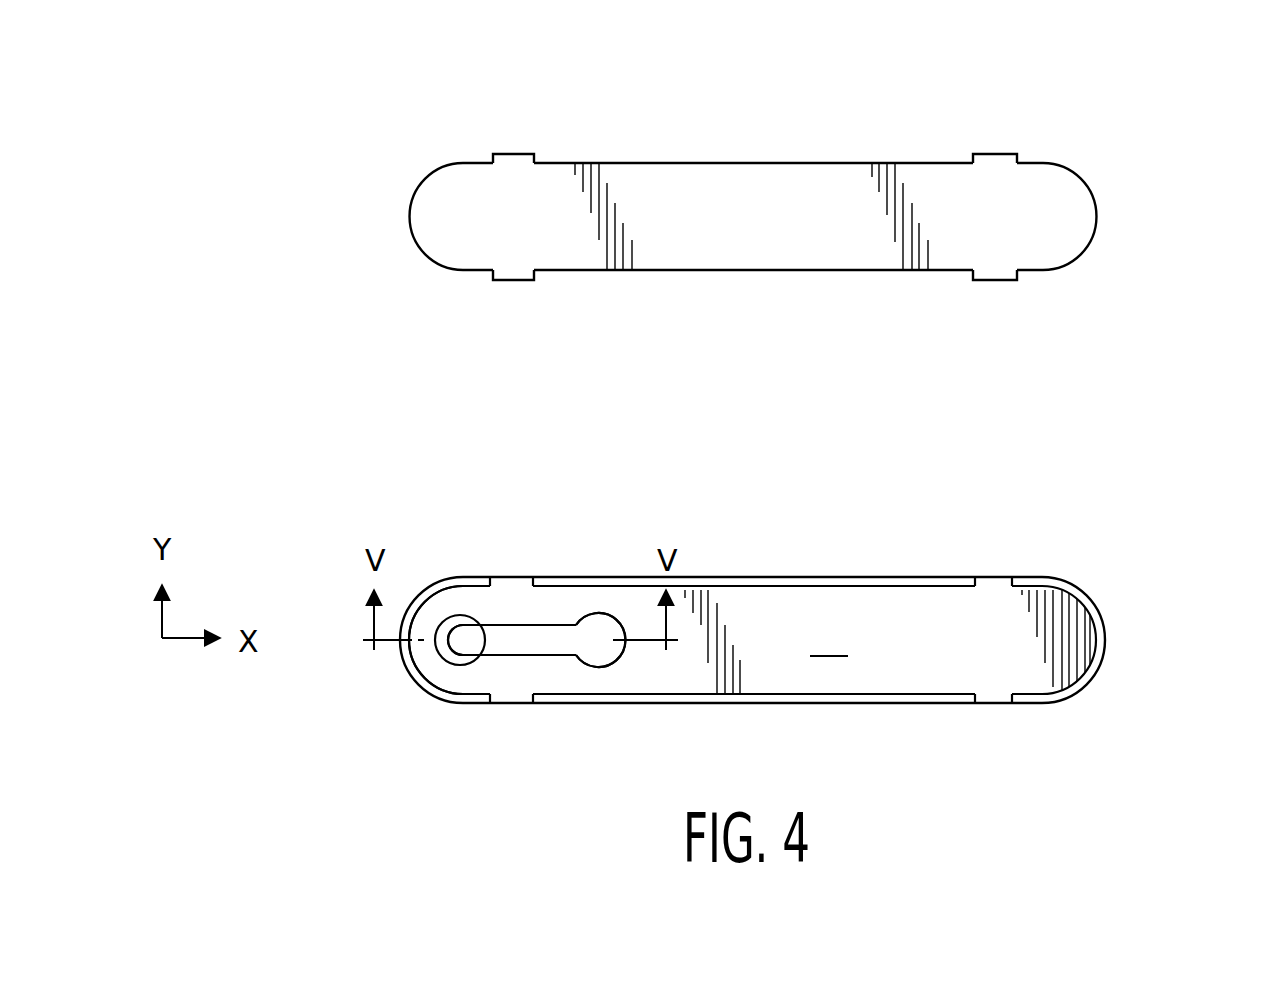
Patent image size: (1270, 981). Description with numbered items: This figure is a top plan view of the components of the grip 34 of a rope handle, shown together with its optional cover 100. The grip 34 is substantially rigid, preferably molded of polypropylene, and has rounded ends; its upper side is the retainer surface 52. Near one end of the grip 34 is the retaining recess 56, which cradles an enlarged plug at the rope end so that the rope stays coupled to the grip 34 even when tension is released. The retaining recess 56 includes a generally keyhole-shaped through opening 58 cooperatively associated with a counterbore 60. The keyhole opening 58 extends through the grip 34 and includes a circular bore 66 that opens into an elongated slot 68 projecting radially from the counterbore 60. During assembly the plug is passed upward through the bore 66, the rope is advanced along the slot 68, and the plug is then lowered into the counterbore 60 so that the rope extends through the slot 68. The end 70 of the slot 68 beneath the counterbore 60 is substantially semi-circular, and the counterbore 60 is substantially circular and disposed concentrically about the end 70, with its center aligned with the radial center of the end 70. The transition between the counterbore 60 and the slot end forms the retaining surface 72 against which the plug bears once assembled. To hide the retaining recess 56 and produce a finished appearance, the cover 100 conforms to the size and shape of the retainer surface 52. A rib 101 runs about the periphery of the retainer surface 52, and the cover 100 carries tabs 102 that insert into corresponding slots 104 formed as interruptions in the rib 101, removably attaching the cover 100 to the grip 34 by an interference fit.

The cover 100 is at (736, 141).
The tabs 102 is at (517, 158).
The rib 101 is at (1105, 638).
The slots 104 is at (513, 585).
The upper retainer surface 52 is at (829, 638).
The grip 34 is at (752, 628).
The retaining recess 56 is at (553, 626).
The keyhole-shaped through opening 58 is at (598, 613).
The circular bore 66 is at (591, 632).
The slot 68 is at (531, 640).
The retaining surface 72 is at (460, 614).
The end of the slot 70 is at (435, 633).
The counterbore 60 is at (444, 658).